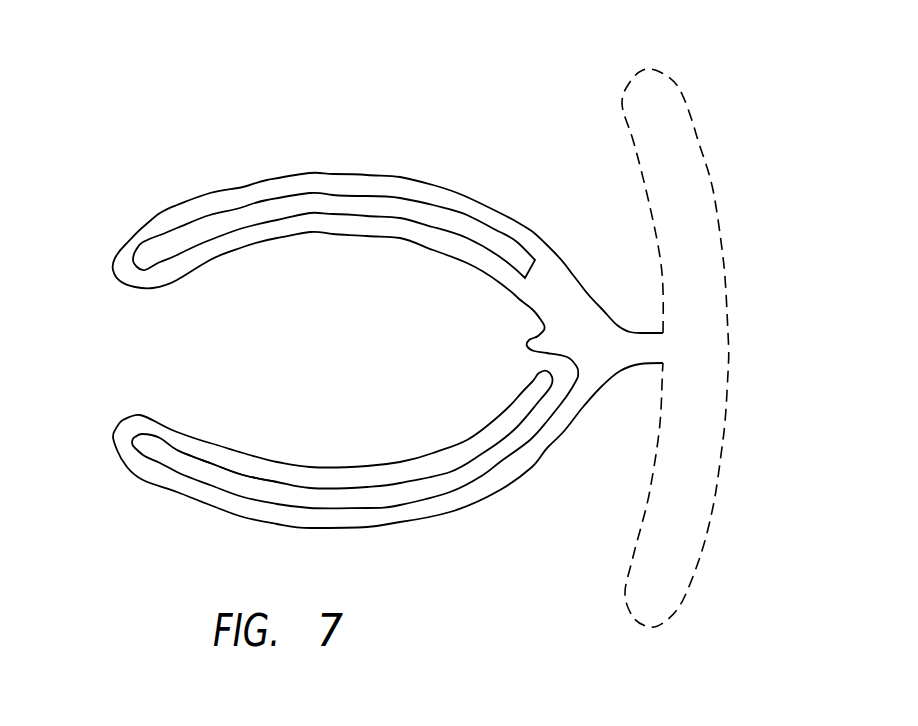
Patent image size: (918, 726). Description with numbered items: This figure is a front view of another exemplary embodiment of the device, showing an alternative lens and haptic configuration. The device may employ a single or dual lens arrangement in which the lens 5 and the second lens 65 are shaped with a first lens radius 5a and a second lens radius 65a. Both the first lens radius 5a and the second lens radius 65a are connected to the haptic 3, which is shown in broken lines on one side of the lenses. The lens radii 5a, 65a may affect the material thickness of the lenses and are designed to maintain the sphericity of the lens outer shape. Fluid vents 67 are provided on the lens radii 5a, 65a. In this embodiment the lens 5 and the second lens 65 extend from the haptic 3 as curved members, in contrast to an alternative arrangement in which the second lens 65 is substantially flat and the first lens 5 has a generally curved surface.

The haptic 3 is at (688, 150).
The lens 5 is at (384, 226).
The first lens radius 5a is at (501, 232).
The second lens 65 is at (422, 507).
The second lens radius 65a is at (182, 448).
The fluid vents 67 is at (120, 413).